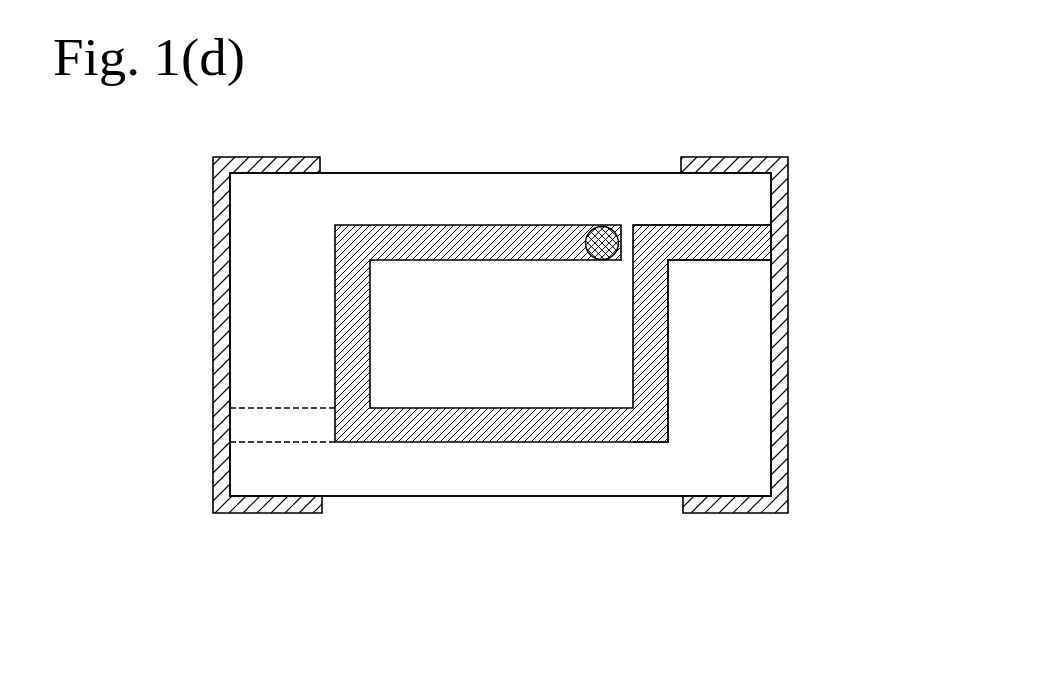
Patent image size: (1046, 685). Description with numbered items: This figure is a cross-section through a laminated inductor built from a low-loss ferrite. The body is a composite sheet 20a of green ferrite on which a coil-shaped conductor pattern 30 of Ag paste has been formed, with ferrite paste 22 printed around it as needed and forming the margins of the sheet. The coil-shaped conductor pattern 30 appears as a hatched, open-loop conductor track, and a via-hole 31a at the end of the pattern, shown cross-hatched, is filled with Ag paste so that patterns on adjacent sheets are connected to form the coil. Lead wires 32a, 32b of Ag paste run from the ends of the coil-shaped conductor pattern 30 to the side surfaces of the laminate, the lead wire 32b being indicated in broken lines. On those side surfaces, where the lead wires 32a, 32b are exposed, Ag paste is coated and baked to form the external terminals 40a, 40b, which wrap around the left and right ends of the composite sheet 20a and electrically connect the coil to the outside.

The composite sheet having coil-shaped conductor patterns 20a is at (525, 506).
The ferrite paste 22 is at (448, 378).
The coil-shaped conductor pattern 30 is at (488, 225).
The via-hole 31a is at (600, 225).
The lead wire 32a is at (728, 230).
The lead wire 32b is at (265, 430).
The external terminal 40a is at (780, 330).
The external terminal 40b is at (222, 333).